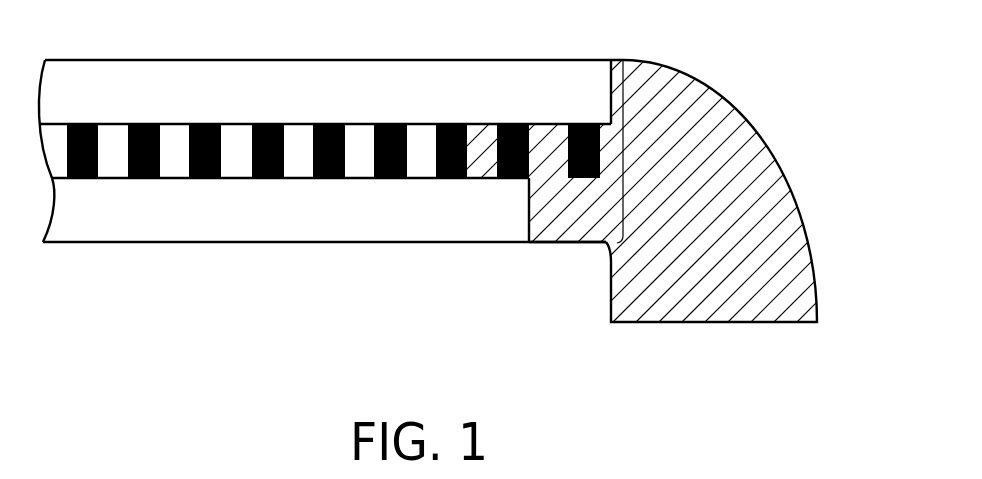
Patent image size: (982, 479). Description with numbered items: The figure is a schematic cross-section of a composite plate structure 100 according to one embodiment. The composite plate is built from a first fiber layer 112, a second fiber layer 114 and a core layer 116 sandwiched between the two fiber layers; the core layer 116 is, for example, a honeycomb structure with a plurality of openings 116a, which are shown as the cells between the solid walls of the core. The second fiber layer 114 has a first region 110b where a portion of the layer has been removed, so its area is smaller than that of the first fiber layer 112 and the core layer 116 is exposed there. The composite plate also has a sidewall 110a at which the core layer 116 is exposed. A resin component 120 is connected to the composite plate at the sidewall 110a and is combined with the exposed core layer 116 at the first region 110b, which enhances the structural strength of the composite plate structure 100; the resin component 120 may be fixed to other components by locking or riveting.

The composite plate structure 100 is at (510, 210).
The sidewall 110a is at (624, 150).
The first region 110b is at (606, 253).
The first fiber layer 112 is at (238, 85).
The second fiber layer 114 is at (360, 207).
The core layer 116 is at (267, 124).
The openings 116a is at (115, 148).
The resin component 120 is at (713, 153).